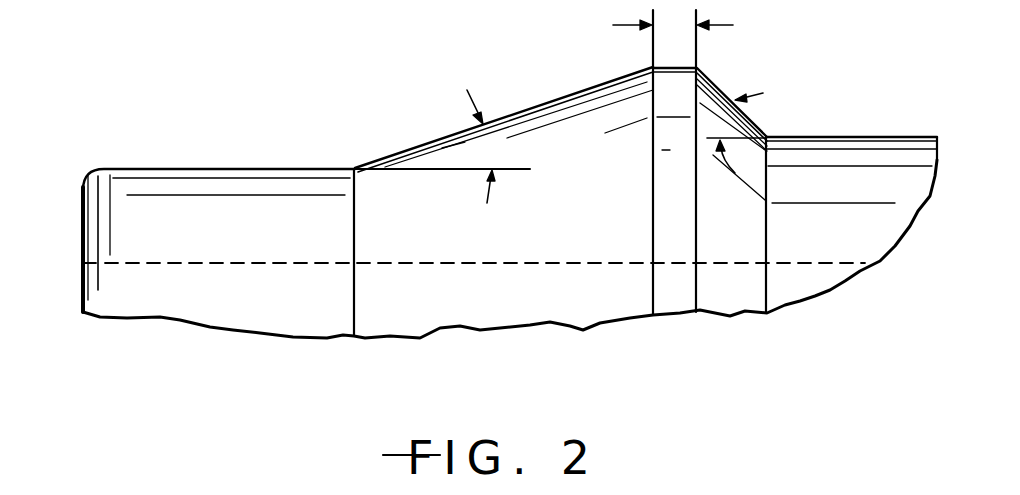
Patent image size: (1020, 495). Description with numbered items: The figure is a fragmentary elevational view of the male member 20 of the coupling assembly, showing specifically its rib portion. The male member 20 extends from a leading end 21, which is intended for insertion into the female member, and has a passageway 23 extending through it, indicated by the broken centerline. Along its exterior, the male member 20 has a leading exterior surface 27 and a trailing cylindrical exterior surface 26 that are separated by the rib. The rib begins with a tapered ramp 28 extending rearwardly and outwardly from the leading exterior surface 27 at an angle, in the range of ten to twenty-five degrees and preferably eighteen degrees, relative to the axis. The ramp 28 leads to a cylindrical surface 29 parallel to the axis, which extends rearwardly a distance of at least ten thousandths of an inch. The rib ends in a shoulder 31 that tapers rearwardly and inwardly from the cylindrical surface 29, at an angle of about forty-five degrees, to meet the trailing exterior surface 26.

The male member 20 is at (283, 118).
The leading end 21 is at (81, 218).
The passageway 23 is at (200, 263).
The trailing cylindrical exterior surface 26 is at (848, 137).
The leading exterior surface 27 is at (182, 167).
The tapered ramp 28 is at (530, 107).
The cylindrical surface 29 is at (667, 77).
The shoulder 31 is at (720, 85).